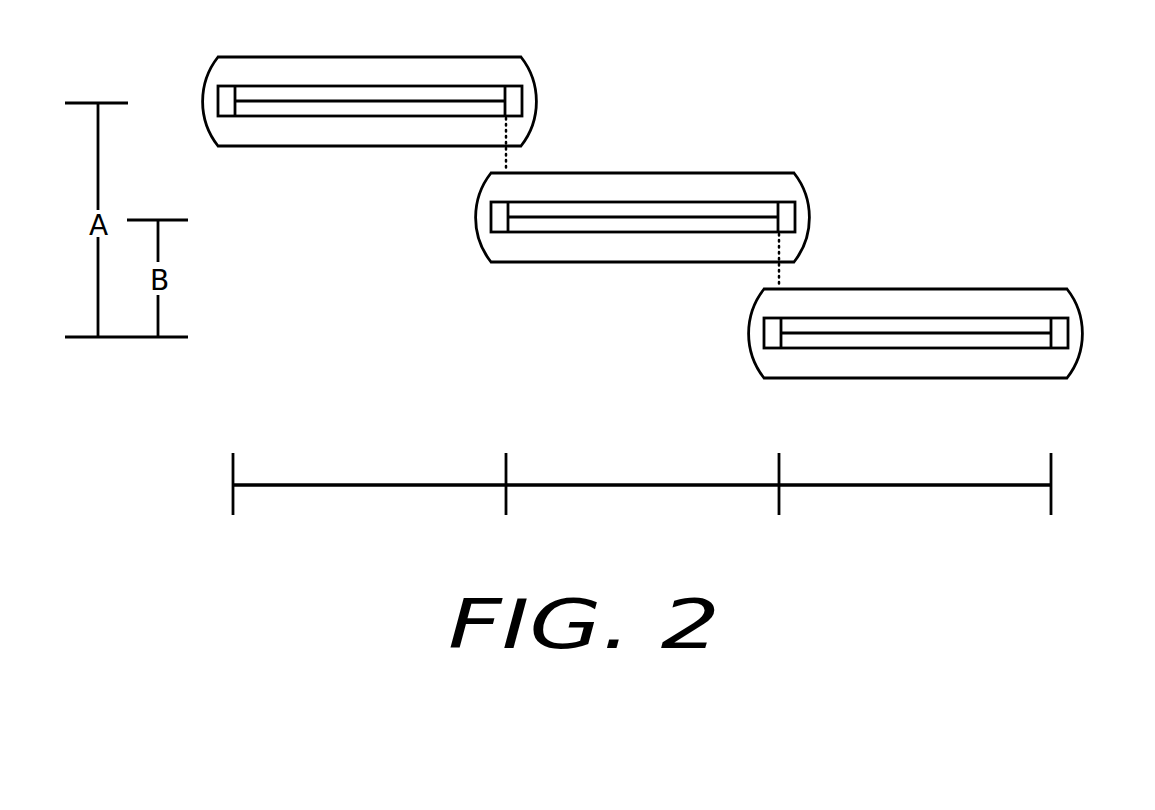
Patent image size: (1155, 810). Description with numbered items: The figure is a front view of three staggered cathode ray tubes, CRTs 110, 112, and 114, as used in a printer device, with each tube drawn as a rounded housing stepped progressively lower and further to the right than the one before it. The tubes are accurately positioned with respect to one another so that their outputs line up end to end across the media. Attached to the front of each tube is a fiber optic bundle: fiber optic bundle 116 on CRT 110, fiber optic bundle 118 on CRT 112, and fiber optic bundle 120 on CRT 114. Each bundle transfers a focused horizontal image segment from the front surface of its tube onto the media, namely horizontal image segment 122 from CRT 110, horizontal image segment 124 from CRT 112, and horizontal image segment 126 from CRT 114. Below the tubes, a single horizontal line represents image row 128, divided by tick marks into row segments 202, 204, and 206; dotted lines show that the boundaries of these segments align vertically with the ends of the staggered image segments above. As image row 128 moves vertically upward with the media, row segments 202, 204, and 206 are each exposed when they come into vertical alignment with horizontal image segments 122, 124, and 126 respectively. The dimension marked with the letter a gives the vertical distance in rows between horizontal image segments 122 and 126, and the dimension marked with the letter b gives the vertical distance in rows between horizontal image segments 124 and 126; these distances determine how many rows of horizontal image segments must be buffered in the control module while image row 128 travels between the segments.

The CRT 110 is at (513, 57).
The CRT 112 is at (786, 173).
The CRT 114 is at (1056, 289).
The fiber optic bundle 116 is at (250, 116).
The fiber optic bundle 118 is at (523, 232).
The fiber optic bundle 120 is at (797, 349).
The horizontal image segment 122 is at (400, 101).
The horizontal image segment 124 is at (673, 217).
The horizontal image segment 126 is at (947, 334).
The image row 128 is at (1063, 438).
The row segment 202 is at (292, 485).
The row segment 204 is at (565, 484).
The row segment 206 is at (838, 484).